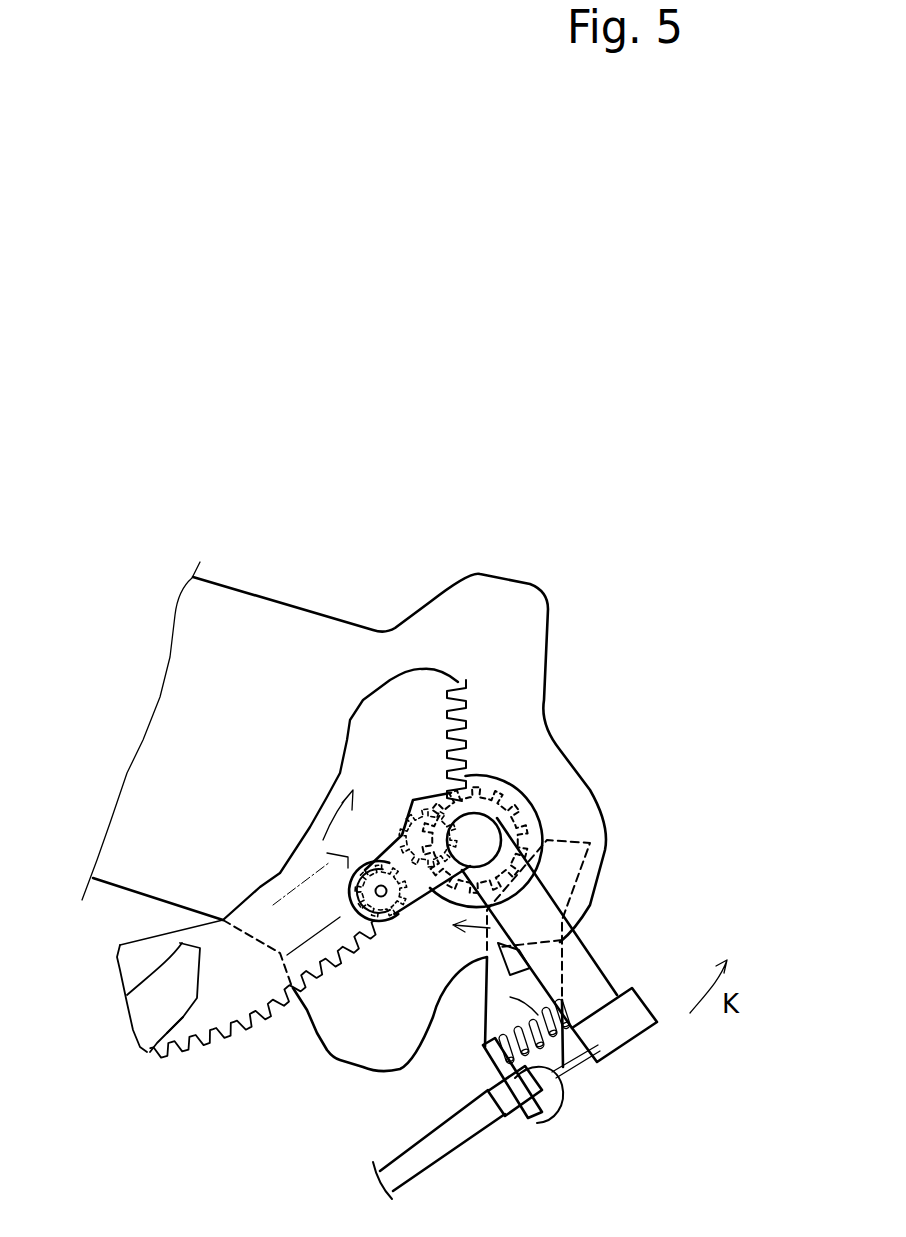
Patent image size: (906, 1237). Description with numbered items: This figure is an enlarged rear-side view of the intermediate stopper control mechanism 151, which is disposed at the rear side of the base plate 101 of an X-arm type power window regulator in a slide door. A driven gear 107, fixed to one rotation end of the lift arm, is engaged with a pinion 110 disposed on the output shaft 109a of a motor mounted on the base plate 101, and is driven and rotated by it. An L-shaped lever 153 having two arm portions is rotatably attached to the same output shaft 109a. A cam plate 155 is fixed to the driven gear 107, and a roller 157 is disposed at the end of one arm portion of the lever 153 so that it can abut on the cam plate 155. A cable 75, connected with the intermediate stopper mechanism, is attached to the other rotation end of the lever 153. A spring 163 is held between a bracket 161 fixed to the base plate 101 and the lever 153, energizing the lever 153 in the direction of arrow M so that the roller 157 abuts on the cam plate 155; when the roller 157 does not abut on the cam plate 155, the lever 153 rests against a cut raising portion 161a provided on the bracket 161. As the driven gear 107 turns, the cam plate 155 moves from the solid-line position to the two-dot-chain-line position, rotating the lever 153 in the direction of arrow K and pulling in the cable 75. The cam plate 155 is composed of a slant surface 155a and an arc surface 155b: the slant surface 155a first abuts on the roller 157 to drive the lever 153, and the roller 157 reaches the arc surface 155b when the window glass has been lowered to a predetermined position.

The base plate 101 is at (213, 603).
The intermediate stopper control mechanism 151 is at (579, 636).
The pinion 110 is at (523, 797).
The output shaft 109a is at (488, 847).
The L-shaped lever 153 is at (490, 928).
The roller 157 is at (327, 853).
The driven gear 107 is at (280, 885).
The cut raising portion 161a is at (525, 962).
The bracket 161 is at (565, 1038).
The spring 163 is at (563, 1080).
The cable 75 is at (427, 1168).
The cam plate 155 is at (153, 1023).
The slant surface 155a is at (203, 970).
The arc surface 155b is at (193, 1007).